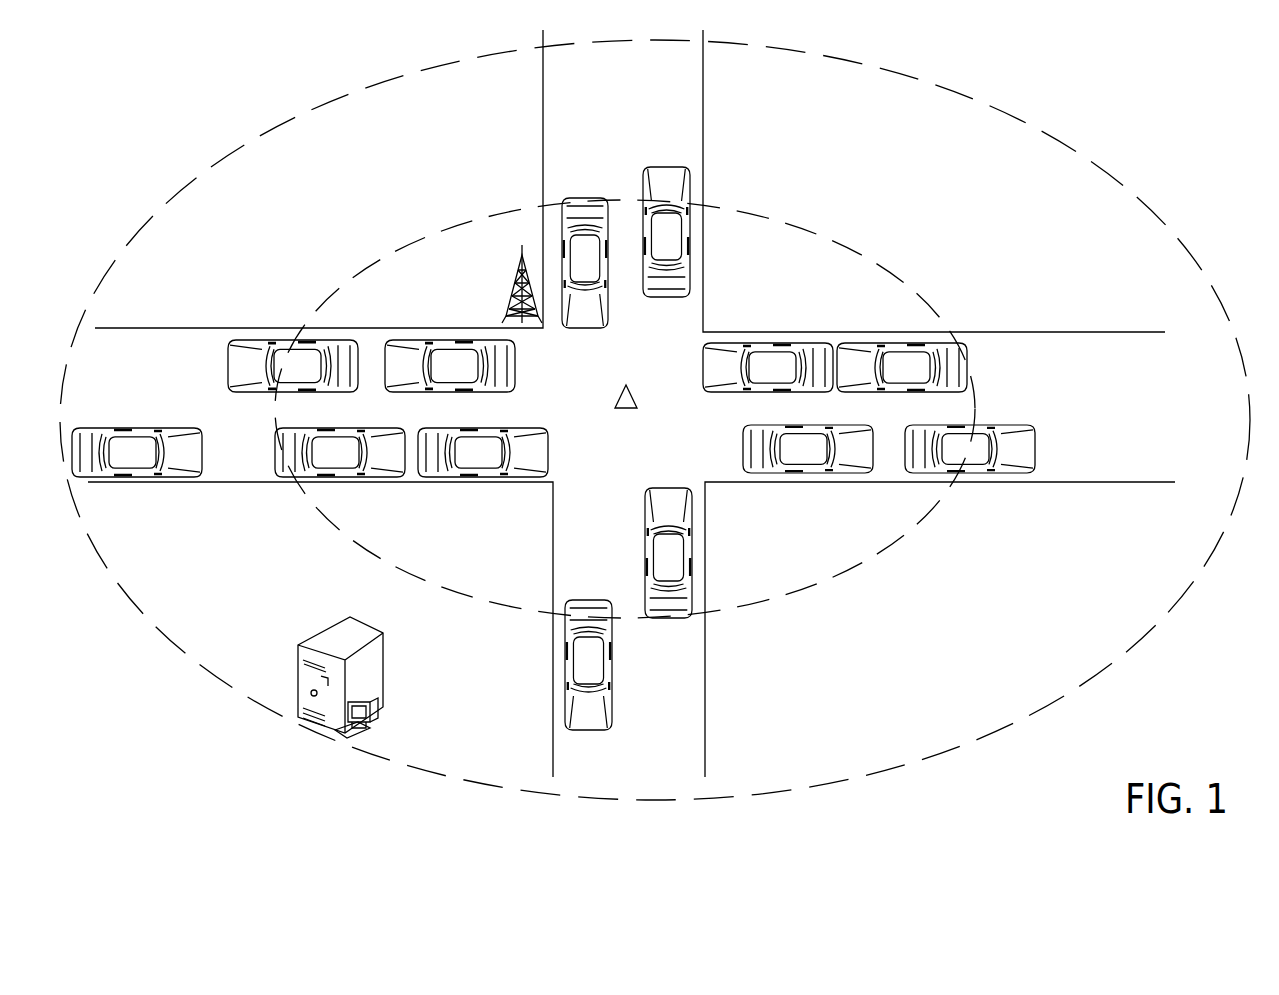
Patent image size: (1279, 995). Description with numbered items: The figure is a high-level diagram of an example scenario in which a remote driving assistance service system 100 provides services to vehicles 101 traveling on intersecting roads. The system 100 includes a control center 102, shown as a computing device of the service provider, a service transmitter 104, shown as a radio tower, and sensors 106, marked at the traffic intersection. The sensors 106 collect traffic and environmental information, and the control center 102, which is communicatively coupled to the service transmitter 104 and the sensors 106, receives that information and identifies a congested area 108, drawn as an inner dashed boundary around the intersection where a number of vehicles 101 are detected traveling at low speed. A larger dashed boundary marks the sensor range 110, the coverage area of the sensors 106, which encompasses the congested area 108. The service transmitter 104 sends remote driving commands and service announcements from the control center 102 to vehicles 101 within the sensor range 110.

The remote driving assistance service system 100 is at (110, 55).
The vehicle 101 is at (482, 481).
The control center 102 is at (297, 682).
The service transmitter 104 is at (512, 285).
The sensors 106 is at (626, 421).
The congested area 108 is at (784, 223).
The sensor range 110 is at (1067, 135).